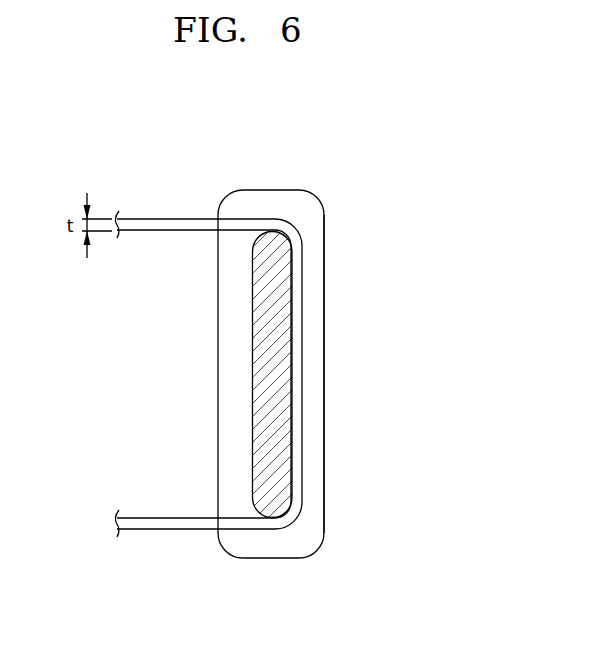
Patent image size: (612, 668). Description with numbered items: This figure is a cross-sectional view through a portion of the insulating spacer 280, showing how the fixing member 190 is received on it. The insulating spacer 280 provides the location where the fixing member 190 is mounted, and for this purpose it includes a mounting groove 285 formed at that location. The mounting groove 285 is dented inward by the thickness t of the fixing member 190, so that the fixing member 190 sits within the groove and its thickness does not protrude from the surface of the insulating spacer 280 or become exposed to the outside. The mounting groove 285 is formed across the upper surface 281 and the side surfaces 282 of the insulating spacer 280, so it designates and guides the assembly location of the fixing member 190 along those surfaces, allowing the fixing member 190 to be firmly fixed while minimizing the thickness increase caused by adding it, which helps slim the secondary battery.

The fixing member 190 is at (167, 228).
The insulating spacer 280 is at (348, 173).
The upper surface 281 is at (327, 381).
The side surfaces 282 is at (272, 190).
The mounting groove 285 is at (262, 380).